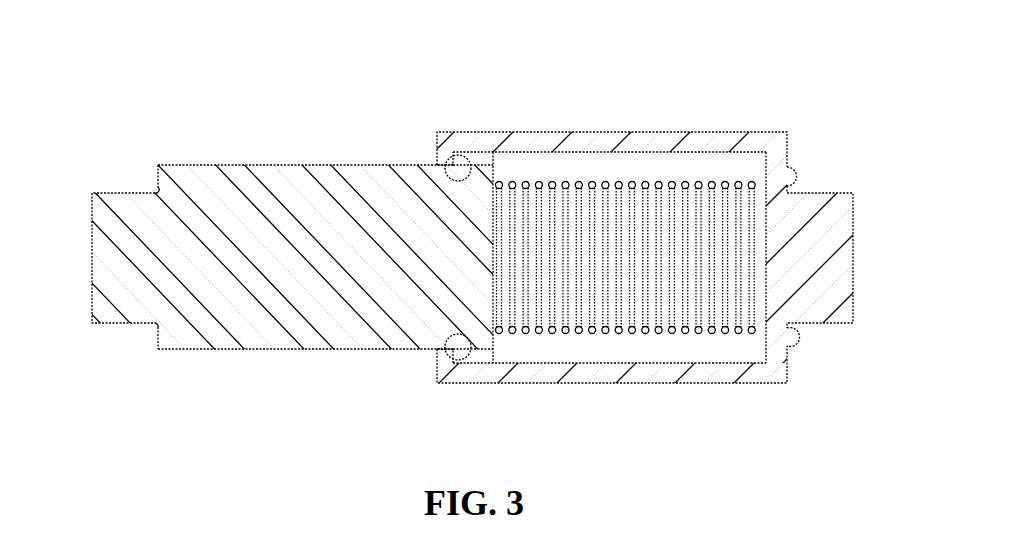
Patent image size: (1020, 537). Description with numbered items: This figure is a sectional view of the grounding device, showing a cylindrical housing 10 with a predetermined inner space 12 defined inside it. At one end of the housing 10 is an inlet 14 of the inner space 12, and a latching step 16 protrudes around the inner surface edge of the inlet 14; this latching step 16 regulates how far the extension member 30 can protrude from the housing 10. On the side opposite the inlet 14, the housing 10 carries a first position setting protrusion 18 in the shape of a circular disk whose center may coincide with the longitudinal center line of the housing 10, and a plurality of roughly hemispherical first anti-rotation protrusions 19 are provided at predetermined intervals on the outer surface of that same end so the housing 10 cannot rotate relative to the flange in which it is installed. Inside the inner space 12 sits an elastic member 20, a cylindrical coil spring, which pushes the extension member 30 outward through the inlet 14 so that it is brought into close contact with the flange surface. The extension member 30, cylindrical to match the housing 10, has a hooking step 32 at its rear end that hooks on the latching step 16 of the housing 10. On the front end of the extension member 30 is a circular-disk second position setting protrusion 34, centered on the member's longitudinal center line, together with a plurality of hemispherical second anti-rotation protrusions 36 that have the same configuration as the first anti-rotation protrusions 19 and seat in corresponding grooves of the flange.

The housing 10 is at (608, 131).
The inner space 12 is at (703, 347).
The inlet 14 is at (458, 366).
The latching step 16 is at (437, 354).
The first position setting protrusion 18 is at (828, 192).
The first anti-rotation protrusion 19 is at (792, 342).
The elastic member 20 is at (640, 339).
The extension member 30 is at (255, 164).
The hooking step 32 is at (472, 372).
The second position setting protrusion 34 is at (113, 192).
The second anti-rotation protrusion 36 is at (157, 333).